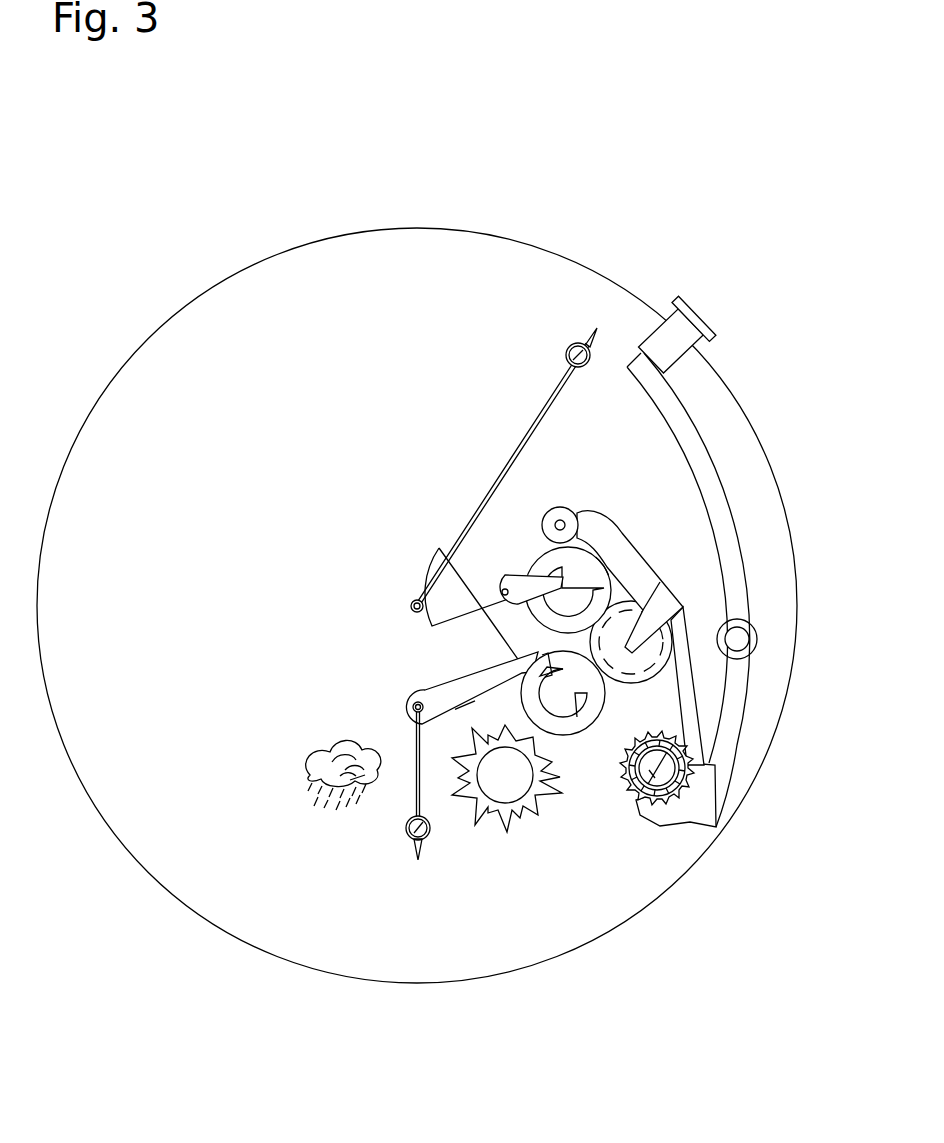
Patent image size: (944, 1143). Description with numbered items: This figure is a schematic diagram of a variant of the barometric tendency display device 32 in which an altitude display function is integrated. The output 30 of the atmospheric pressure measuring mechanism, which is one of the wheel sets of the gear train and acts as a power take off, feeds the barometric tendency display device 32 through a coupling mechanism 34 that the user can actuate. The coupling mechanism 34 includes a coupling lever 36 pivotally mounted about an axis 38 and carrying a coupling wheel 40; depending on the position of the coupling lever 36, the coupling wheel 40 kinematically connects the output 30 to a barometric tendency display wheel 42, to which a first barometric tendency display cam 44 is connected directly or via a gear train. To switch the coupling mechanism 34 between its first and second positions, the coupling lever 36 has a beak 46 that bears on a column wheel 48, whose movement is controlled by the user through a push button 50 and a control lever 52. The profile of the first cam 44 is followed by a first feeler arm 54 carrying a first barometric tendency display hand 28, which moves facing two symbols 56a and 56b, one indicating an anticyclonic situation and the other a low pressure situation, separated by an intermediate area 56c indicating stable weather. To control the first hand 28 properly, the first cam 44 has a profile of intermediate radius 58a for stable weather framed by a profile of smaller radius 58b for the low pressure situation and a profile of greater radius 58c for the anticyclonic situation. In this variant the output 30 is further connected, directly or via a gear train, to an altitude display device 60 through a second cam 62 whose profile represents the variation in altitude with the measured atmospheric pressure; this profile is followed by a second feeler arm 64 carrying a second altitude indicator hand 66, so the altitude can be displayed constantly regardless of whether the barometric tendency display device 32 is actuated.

The first barometric tendency display hand 28 is at (412, 836).
The output of atmospheric pressure measuring mechanism 30 is at (534, 558).
The barometric tendency display device 32 is at (445, 664).
The coupling mechanism 34 is at (695, 577).
The coupling lever 36 is at (598, 532).
The axis 38 is at (556, 508).
The coupling wheel 40 is at (633, 684).
The barometric tendency display wheel 42 is at (556, 734).
The first barometric tendency display cam 44 is at (427, 580).
The beak 46 is at (694, 764).
The column wheel 48 is at (658, 798).
The push button 50 is at (658, 336).
The control lever 52 is at (747, 587).
The first feeler arm 54 is at (402, 702).
The symbol 56a is at (497, 790).
The symbol 56b is at (308, 758).
The intermediate area 56c is at (368, 812).
The profile of intermediate radius 58a is at (438, 546).
The profile of smaller radius 58b is at (538, 692).
The profile of greater radius 58c is at (466, 708).
The altitude display device 60 is at (486, 460).
The second cam 62 is at (613, 563).
The second feeler arm 64 is at (516, 575).
The second altitude indicator hand 66 is at (571, 345).